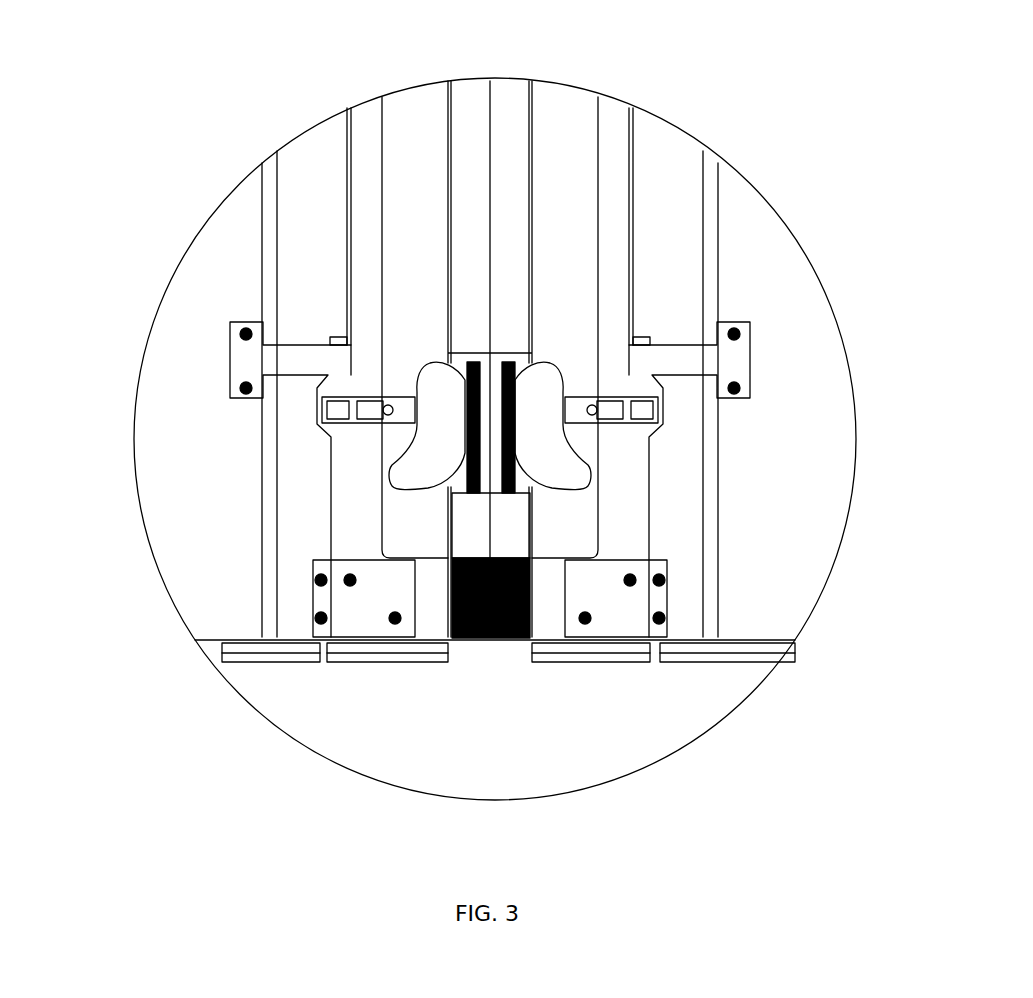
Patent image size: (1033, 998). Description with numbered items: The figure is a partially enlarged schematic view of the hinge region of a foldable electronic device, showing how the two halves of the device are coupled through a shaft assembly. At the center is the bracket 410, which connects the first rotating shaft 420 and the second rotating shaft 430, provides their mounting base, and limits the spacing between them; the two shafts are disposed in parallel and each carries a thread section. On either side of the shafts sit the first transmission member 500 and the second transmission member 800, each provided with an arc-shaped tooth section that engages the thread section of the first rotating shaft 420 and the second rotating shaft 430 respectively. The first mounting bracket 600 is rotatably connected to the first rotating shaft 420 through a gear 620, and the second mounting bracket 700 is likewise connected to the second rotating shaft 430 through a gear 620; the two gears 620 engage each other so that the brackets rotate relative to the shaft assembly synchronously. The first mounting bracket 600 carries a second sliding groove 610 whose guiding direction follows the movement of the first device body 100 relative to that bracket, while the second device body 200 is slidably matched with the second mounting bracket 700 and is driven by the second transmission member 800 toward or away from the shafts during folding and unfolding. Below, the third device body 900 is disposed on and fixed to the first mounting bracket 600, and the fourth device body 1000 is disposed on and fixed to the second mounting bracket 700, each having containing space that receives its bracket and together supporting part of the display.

The first device body 100 is at (232, 623).
The second device body 200 is at (743, 630).
The bracket 410 is at (473, 158).
The first rotating shaft 420 is at (463, 365).
The second rotating shaft 430 is at (510, 363).
The first transmission member 500 is at (405, 465).
The first mounting bracket 600 is at (347, 505).
The second sliding groove 610 is at (320, 407).
The gear 620 is at (480, 668).
The second mounting bracket 700 is at (570, 462).
The second transmission member 800 is at (628, 513).
The third device body 900 is at (365, 648).
The fourth device body 1000 is at (620, 647).